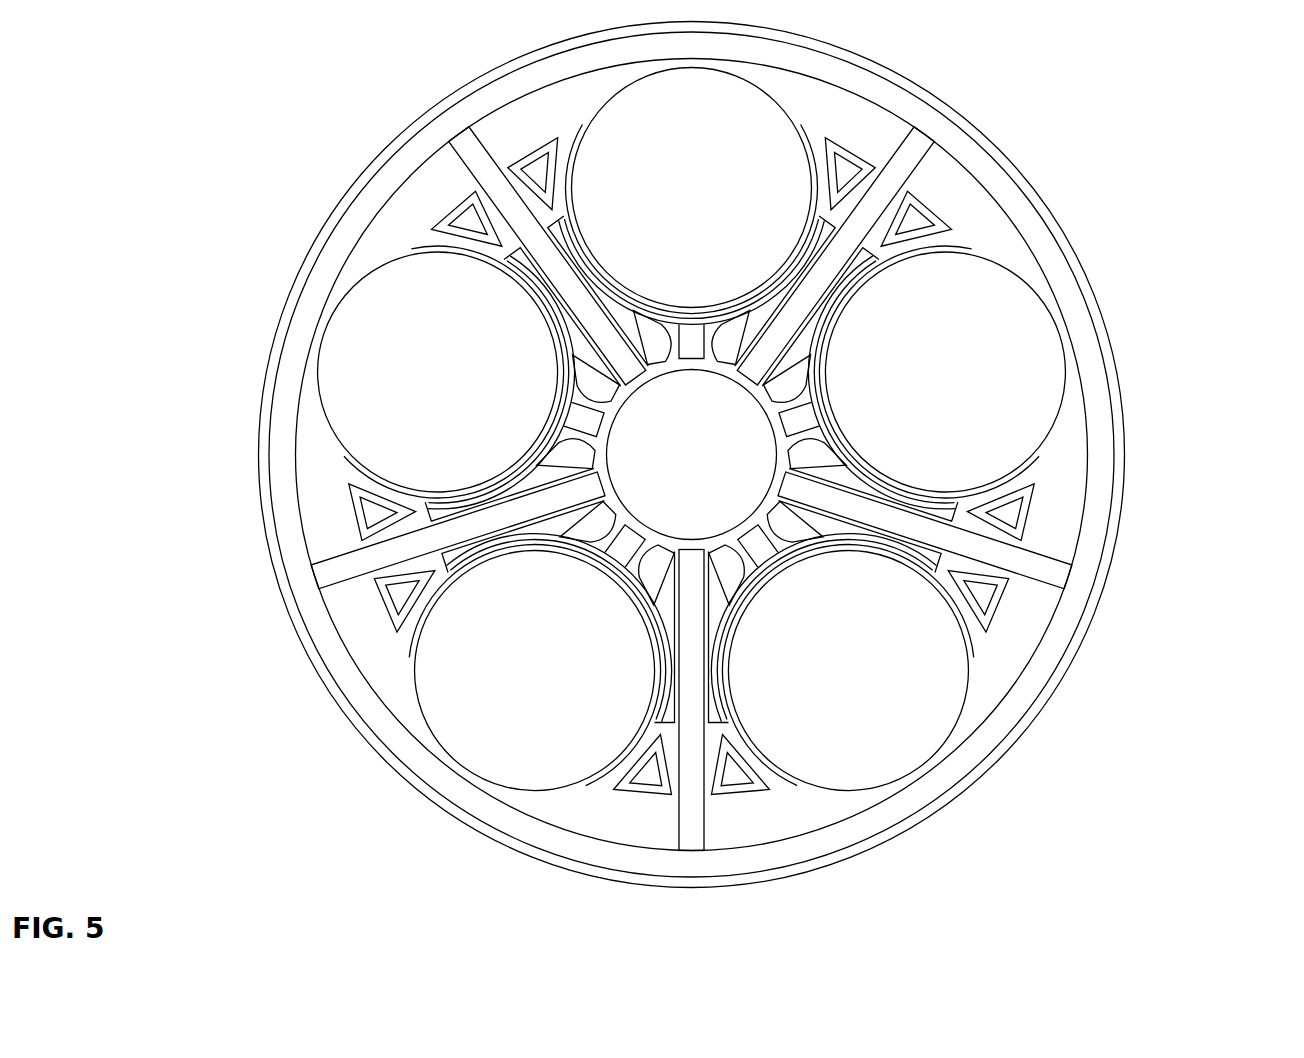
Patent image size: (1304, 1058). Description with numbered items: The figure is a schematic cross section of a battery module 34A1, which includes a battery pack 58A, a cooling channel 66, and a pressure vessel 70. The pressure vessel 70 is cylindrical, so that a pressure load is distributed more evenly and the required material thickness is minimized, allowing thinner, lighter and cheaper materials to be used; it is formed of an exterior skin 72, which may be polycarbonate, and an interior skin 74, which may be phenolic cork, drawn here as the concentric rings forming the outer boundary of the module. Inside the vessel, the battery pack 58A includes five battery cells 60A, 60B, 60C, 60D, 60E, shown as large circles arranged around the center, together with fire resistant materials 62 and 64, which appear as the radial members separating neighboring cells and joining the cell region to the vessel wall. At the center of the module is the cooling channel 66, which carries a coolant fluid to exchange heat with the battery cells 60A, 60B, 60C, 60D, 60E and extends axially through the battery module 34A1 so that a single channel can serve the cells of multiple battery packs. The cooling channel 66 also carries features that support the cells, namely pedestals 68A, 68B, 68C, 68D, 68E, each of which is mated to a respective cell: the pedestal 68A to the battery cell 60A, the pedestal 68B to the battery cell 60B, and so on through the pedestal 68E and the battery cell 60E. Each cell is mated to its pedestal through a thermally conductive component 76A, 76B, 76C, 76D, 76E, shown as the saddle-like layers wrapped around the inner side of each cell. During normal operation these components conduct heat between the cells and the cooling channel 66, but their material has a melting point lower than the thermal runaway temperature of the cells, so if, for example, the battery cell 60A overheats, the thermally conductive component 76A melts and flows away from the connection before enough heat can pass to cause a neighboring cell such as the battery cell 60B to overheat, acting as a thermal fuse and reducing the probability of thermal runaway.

The battery module 34A1 is at (1192, 86).
The battery pack 58A is at (1070, 181).
The pressure vessel 70 is at (245, 324).
The exterior skin 72 is at (331, 213).
The interior skin 74 is at (323, 271).
The fire resistant material 62 is at (513, 128).
The fire resistant material 64 is at (323, 572).
The cooling channel 66 is at (753, 521).
The battery cell 60A is at (752, 206).
The battery cell 60B is at (1041, 406).
The battery cell 60C is at (878, 740).
The battery cell 60D is at (569, 730).
The battery cell 60E is at (456, 378).
The pedestal 68A is at (657, 320).
The pedestal 68B is at (852, 327).
The pedestal 68C is at (726, 640).
The pedestal 68D is at (663, 690).
The pedestal 68E is at (558, 329).
The thermally conductive component 76A is at (603, 272).
The thermally conductive component 76B is at (900, 484).
The thermally conductive component 76C is at (822, 560).
The thermally conductive component 76D is at (557, 560).
The thermally conductive component 76E is at (489, 482).